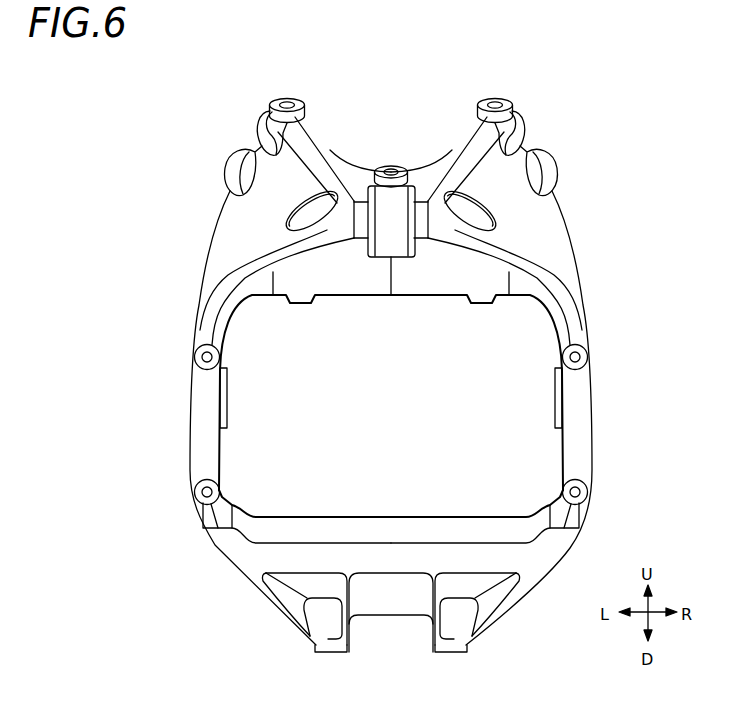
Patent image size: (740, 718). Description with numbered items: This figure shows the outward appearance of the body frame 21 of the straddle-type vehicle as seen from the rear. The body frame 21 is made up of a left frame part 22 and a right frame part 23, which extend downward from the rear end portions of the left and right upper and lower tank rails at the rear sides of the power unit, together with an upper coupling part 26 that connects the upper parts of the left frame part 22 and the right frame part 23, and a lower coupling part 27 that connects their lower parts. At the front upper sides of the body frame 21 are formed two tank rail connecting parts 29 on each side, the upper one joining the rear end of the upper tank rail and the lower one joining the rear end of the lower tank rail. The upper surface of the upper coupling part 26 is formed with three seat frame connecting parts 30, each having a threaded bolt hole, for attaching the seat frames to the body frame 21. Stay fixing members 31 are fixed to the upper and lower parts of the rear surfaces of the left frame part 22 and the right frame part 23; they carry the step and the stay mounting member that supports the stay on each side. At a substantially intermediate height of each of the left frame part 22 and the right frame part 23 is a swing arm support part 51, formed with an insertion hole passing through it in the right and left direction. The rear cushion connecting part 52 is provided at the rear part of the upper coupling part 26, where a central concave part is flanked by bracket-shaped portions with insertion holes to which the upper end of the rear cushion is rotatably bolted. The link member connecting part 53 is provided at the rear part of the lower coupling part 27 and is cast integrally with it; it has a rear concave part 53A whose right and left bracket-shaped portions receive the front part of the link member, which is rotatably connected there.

The body frame 21 is at (589, 239).
The left frame part 22 is at (198, 291).
The right frame part 23 is at (588, 284).
The upper coupling part 26 is at (338, 156).
The lower coupling part 27 is at (247, 572).
The tank rail connecting part 29 is at (260, 115).
The seat frame connecting part 30 is at (307, 104).
The stay fixing member 31 is at (194, 354).
The swing arm support part 51 is at (228, 400).
The rear cushion connecting part 52 is at (419, 233).
The link member connecting part 53 is at (320, 655).
The rear concave part 53A is at (416, 610).